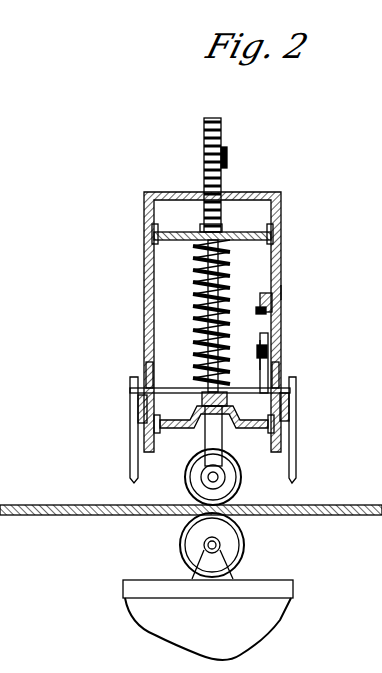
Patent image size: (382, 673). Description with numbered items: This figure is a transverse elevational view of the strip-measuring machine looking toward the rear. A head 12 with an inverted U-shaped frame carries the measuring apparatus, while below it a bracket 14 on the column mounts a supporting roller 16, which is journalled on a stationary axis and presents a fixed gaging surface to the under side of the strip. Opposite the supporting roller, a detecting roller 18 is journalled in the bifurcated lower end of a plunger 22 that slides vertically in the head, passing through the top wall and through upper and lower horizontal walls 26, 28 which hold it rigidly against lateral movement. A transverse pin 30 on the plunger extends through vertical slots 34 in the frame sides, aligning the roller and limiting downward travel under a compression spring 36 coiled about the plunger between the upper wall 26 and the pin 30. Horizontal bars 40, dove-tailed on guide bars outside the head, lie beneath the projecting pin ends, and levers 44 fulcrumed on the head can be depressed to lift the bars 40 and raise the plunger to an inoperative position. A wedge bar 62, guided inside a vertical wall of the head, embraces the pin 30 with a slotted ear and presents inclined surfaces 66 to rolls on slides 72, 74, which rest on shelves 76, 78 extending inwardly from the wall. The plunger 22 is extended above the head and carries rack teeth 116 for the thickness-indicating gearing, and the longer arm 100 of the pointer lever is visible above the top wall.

The head 12 is at (281, 298).
The bracket 14 is at (271, 590).
The rollers 16 is at (243, 548).
The detecting roller 18 is at (186, 481).
The plunger 22 is at (222, 232).
The upper horizontal wall 26 is at (281, 237).
The lower horizontal wall 28 is at (292, 425).
The pin 30 is at (140, 389).
The vertical slots 34 is at (146, 368).
The compression spring 36 is at (197, 325).
The horizontal bars 40 is at (138, 400).
The levers 44 is at (133, 449).
The wedge bar 62 is at (268, 370).
The inclined surfaces 66 is at (267, 348).
The slide 72 is at (261, 350).
The slide 74 is at (283, 293).
The shelf 76 is at (262, 358).
The shelf 78 is at (258, 303).
The longer arm 100 is at (227, 157).
The rack teeth 116 is at (221, 128).